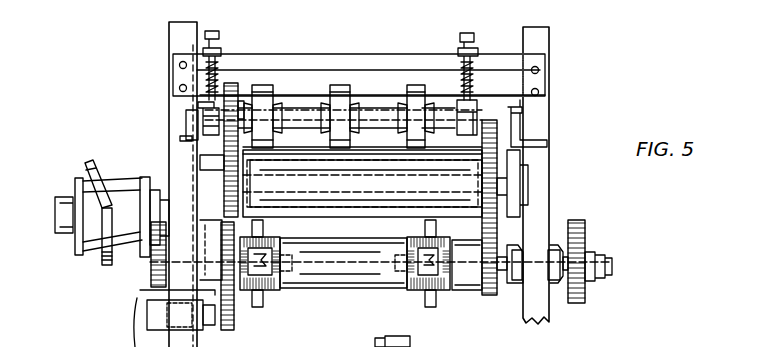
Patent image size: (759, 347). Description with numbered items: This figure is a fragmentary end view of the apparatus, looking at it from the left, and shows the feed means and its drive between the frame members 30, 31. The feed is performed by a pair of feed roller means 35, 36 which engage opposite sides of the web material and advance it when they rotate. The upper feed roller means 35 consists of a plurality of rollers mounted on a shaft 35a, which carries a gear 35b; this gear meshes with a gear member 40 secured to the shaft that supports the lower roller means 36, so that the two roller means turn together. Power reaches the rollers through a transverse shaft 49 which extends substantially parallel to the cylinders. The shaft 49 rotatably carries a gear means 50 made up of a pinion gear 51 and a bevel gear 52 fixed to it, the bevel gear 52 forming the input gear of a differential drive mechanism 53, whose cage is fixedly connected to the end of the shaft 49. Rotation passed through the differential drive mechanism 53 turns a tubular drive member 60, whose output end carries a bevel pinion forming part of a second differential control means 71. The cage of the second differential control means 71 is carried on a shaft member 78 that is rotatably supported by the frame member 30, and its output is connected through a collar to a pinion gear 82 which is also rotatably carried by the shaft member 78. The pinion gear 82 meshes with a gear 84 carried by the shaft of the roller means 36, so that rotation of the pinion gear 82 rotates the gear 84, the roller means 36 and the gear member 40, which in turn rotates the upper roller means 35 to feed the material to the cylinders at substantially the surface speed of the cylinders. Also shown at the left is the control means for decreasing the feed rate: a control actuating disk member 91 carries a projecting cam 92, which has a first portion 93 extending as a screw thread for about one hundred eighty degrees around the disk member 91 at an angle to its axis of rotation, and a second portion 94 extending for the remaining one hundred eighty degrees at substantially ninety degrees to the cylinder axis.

The frame member 30 is at (547, 40).
The frame member 31 is at (178, 32).
The feed roller means 35 is at (362, 86).
The shaft 35a is at (293, 105).
The gear 35b is at (205, 103).
The feed roller means 36 is at (472, 152).
The gear member 40 is at (226, 160).
The shaft 49 is at (147, 295).
The gear means 50 is at (377, 338).
The pinion gear 51 is at (205, 320).
The bevel gear 52 is at (235, 288).
The differential drive mechanism 53 is at (267, 233).
The tubular drive member 60 is at (350, 288).
The second differential control means 71 is at (443, 296).
The shaft member 78 is at (534, 252).
The pinion gear 82 is at (510, 307).
The gear 84 is at (497, 166).
The disk member 91 is at (80, 247).
The cam 92 is at (78, 186).
The first portion 93 is at (82, 184).
The second portion 94 is at (100, 258).